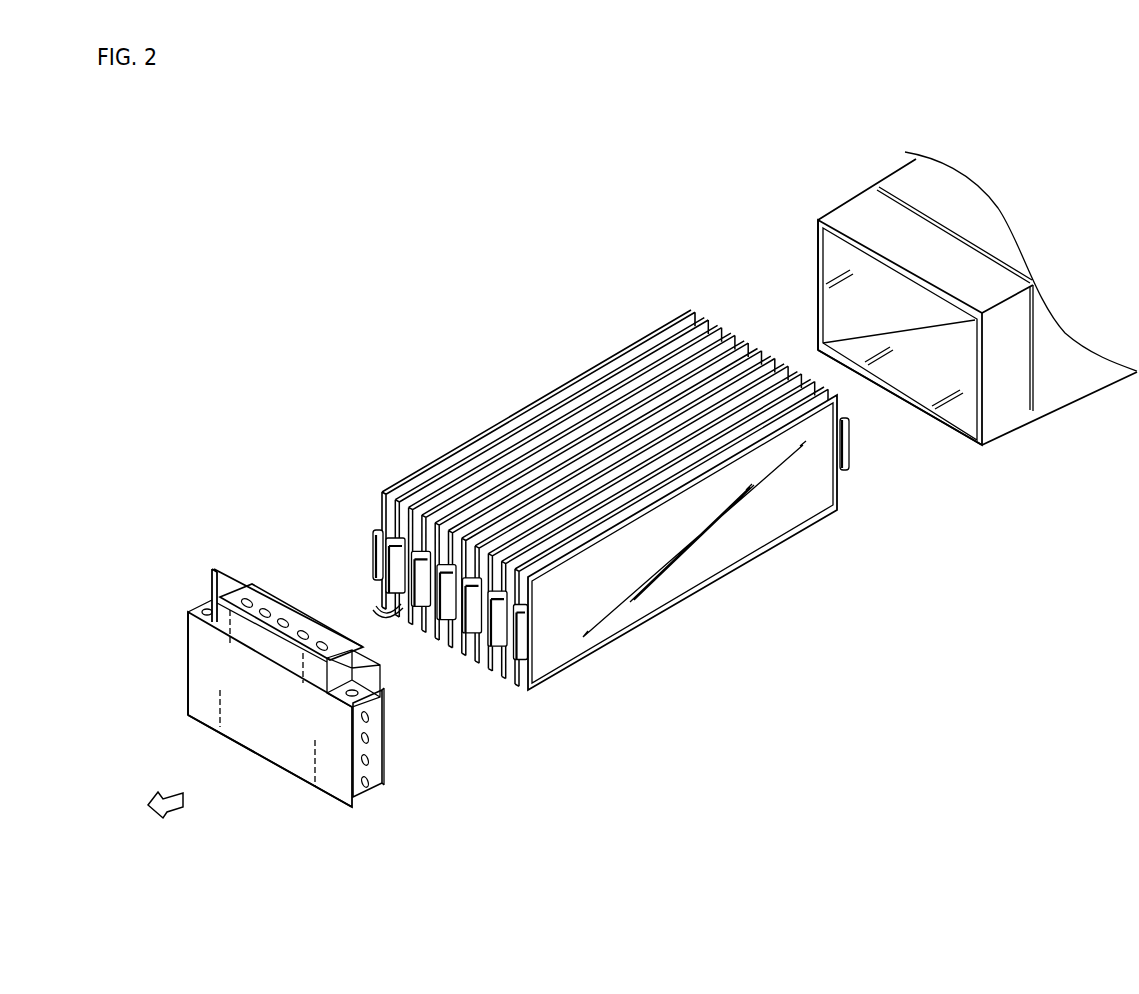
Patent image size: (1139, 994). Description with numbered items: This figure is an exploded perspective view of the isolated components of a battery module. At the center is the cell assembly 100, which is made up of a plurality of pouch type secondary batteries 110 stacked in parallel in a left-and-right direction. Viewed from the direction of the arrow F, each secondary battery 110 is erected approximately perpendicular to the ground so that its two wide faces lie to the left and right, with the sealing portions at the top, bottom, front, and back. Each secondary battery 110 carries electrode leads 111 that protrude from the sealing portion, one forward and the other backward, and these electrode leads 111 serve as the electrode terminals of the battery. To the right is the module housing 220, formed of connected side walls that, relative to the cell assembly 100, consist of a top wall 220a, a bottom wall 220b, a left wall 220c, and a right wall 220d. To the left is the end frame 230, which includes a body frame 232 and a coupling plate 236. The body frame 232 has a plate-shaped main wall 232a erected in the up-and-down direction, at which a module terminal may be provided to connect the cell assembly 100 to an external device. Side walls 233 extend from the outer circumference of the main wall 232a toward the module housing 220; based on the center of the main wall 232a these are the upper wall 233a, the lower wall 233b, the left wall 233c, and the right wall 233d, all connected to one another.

The cell assembly 100 is at (615, 500).
The secondary battery 110 is at (380, 616).
The electrode lead 111 is at (392, 563).
The module housing 220 is at (934, 311).
The top wall 220a is at (972, 217).
The bottom wall 220b is at (923, 413).
The left wall 220c is at (818, 264).
The right wall 220d is at (1007, 405).
The end frame 230 is at (282, 552).
The body frame 232 is at (282, 682).
The main wall 232a is at (240, 725).
The side walls 233 is at (262, 272).
The upper wall 233a is at (227, 588).
The lower wall 233b is at (281, 772).
The left wall 233c is at (186, 655).
The right wall 233d is at (357, 748).
The coupling plate 236 is at (277, 612).